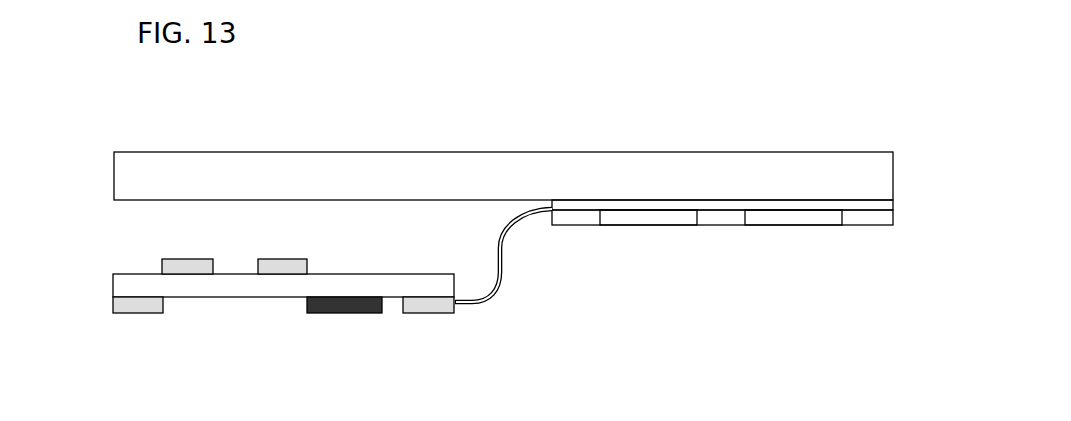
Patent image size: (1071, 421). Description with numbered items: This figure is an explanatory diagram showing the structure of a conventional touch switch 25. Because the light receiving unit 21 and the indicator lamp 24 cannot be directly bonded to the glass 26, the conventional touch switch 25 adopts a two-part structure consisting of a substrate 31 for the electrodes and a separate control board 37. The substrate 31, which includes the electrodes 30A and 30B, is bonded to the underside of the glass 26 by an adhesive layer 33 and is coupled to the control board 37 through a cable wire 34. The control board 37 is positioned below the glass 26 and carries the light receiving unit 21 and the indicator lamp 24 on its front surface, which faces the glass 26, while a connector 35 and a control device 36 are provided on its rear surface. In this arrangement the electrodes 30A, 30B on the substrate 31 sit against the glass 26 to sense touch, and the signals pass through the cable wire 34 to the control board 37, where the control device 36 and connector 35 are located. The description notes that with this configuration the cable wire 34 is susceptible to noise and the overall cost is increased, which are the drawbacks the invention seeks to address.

The touch switch 25 is at (858, 128).
The glass 26 is at (113, 177).
The adhesive layer 33 is at (893, 204).
The substrate 31 is at (893, 222).
The electrode 30A is at (792, 226).
The electrode 30B is at (651, 226).
The cable wire 34 is at (508, 262).
The control board 37 is at (235, 297).
The light receiving unit 21 is at (162, 268).
The indicator lamp 24 is at (307, 268).
The connector 35 is at (138, 313).
The control device 36 is at (345, 314).